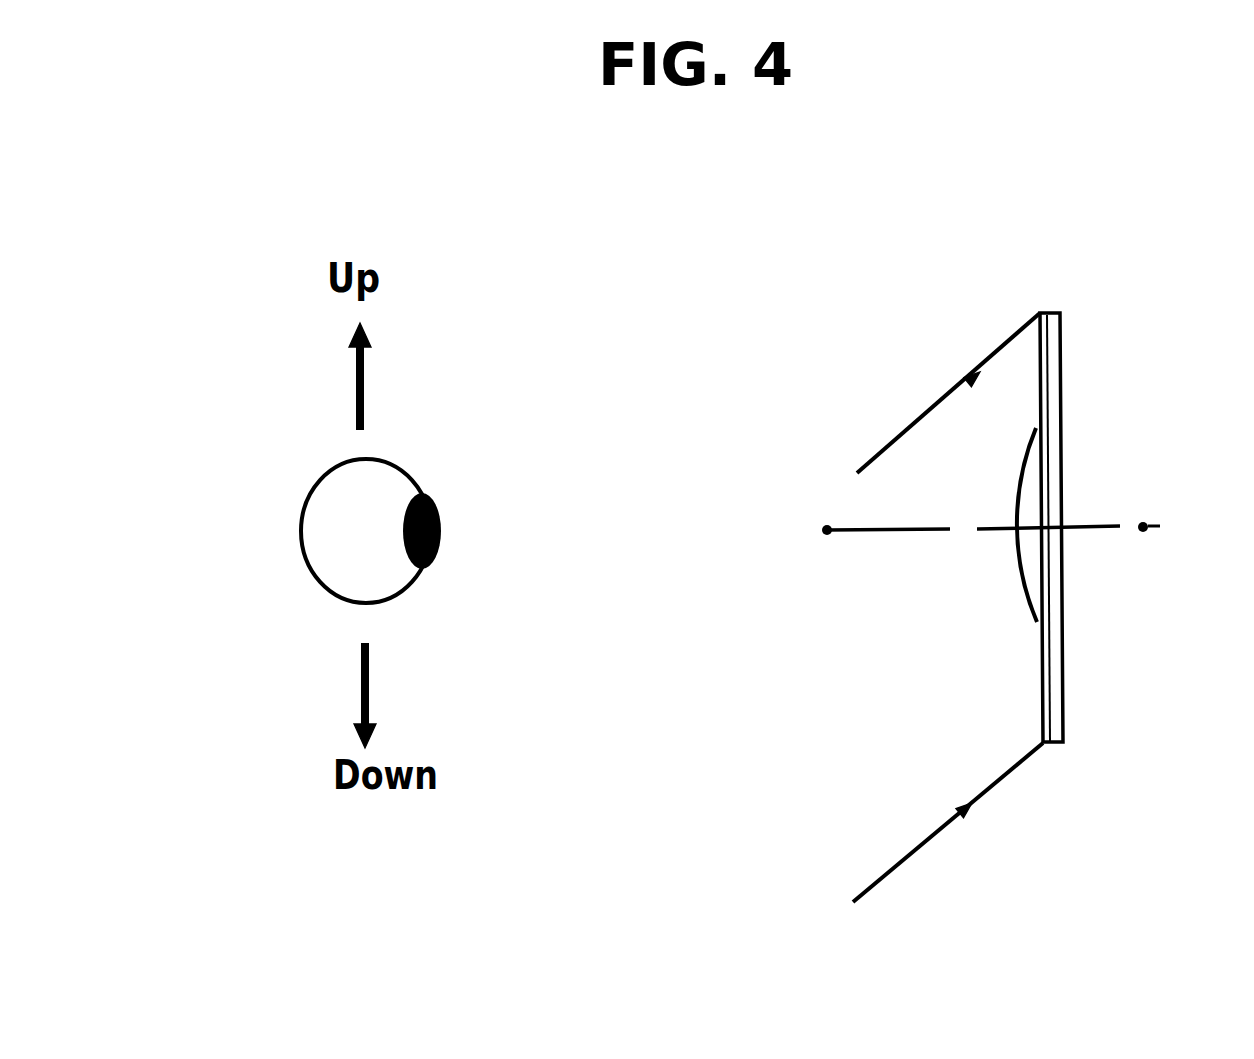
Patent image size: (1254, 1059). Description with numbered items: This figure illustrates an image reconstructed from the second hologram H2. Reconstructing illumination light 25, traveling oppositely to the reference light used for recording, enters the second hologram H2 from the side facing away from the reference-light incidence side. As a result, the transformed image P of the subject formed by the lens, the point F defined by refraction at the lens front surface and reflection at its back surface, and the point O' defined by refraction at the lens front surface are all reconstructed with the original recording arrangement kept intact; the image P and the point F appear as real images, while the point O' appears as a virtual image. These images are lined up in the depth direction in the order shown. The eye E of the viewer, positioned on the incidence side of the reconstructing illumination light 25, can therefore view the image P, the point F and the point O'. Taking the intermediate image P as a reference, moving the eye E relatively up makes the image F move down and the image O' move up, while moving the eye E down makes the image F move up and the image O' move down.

The eye of the viewer E is at (313, 588).
The reconstructing illumination light 25 is at (918, 418).
The point F is at (827, 543).
The transformed image of the subject P is at (1013, 578).
The second hologram H2 is at (1047, 747).
The point O' is at (1176, 471).